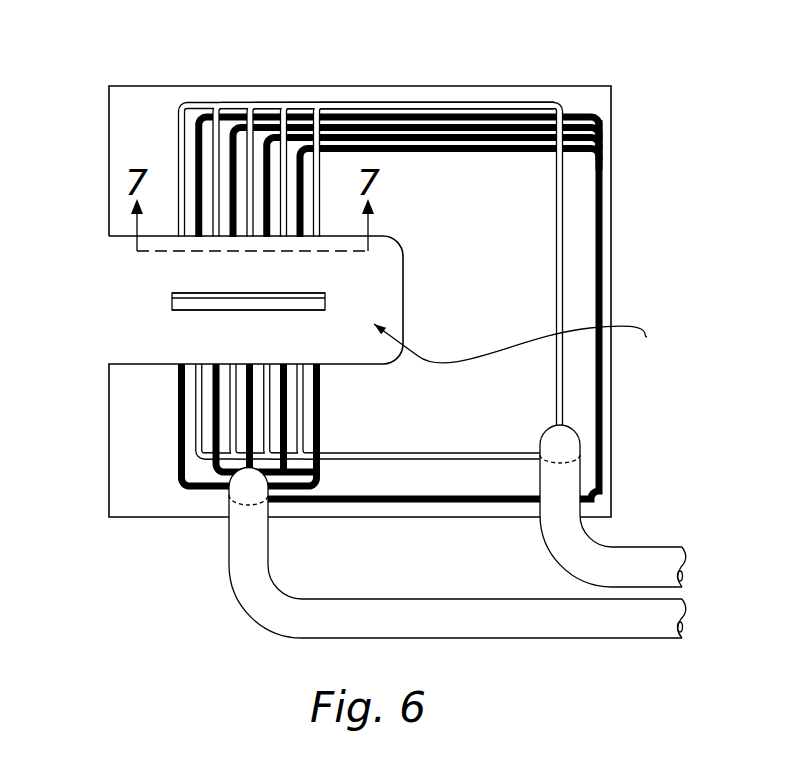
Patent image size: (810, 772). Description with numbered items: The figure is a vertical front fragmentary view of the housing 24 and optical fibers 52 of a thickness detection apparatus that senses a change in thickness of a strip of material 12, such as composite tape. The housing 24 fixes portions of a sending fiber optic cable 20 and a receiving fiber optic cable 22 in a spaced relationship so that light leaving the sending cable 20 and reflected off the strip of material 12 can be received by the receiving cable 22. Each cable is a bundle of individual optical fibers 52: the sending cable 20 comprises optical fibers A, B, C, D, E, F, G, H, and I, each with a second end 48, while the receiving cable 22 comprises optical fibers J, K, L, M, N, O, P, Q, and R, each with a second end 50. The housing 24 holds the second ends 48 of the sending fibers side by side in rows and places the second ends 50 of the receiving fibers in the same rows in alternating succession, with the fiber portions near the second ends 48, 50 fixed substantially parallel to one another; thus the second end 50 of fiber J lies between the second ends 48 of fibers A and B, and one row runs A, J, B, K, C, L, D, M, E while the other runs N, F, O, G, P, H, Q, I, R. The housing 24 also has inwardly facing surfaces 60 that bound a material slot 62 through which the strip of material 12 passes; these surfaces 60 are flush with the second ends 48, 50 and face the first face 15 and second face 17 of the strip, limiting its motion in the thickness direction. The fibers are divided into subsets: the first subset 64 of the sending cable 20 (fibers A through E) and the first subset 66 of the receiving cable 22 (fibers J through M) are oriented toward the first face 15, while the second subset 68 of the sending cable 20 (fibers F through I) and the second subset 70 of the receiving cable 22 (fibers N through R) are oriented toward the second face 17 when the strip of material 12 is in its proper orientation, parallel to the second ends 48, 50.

The housing 24 is at (145, 98).
The optical fibers 52 is at (323, 237).
The inwardly facing surfaces 60 is at (123, 247).
The strip of material 12 is at (180, 295).
The first face 15 is at (238, 294).
The second face 17 is at (273, 311).
The second end 48 is at (313, 238).
The second end 50 is at (240, 436).
The second subset 70 is at (300, 430).
The material slot 62 is at (524, 343).
The first subset 64 is at (557, 235).
The first subset 66 is at (602, 216).
The second subset 68 is at (435, 453).
The sending fiber optic cable 20 is at (642, 560).
The receiving fiber optic cable 22 is at (578, 618).
The optical fiber A is at (186, 101).
The optical fiber B is at (212, 107).
The optical fiber C is at (246, 107).
The optical fiber D is at (278, 108).
The optical fiber E is at (312, 107).
The optical fiber F is at (300, 393).
The optical fiber G is at (267, 410).
The optical fiber H is at (230, 386).
The optical fiber I is at (197, 403).
The optical fiber J is at (196, 162).
The optical fiber K is at (228, 177).
The optical fiber L is at (267, 178).
The optical fiber M is at (303, 202).
The optical fiber N is at (318, 480).
The optical fiber O is at (305, 496).
The optical fiber P is at (280, 482).
The optical fiber Q is at (207, 482).
The optical fiber R is at (186, 492).